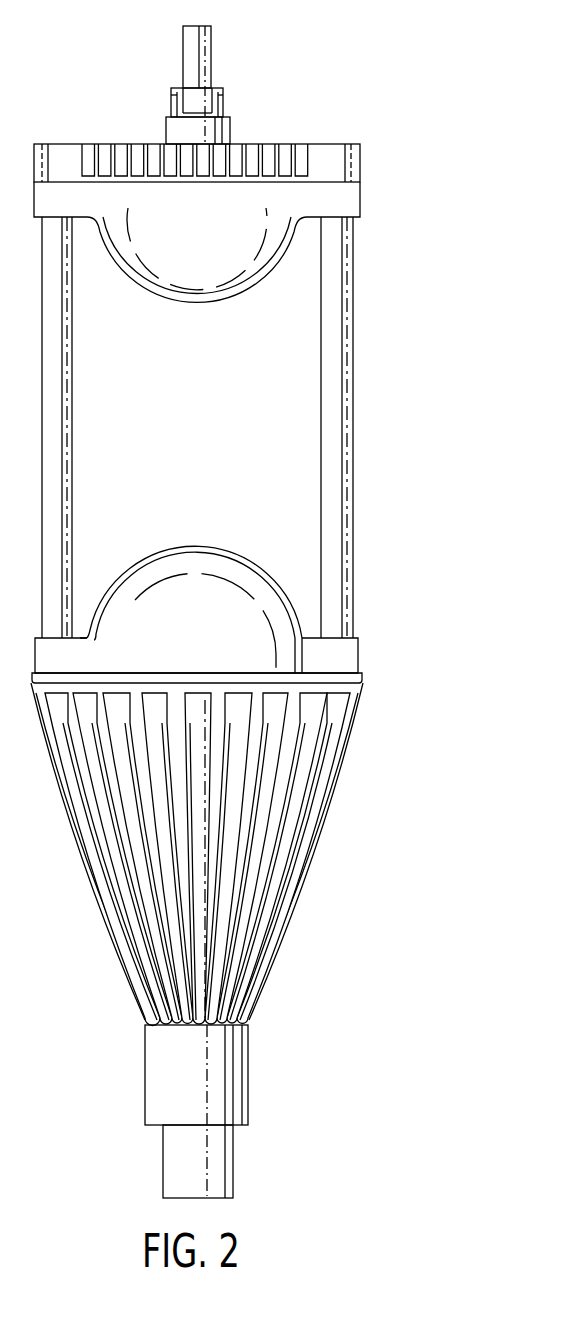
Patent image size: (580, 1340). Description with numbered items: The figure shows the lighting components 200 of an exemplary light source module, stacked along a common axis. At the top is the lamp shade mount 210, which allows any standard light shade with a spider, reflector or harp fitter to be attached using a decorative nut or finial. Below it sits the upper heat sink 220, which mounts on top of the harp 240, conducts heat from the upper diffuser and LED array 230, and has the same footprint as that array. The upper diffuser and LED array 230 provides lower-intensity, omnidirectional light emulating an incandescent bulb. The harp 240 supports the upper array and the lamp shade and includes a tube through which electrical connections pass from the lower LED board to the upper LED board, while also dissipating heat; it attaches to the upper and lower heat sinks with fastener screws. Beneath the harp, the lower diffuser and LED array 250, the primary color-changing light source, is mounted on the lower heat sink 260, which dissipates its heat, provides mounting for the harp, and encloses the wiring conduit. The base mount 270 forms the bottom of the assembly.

The lighting components 200 is at (519, 35).
The lamp shade mount 210 is at (206, 83).
The upper heat sink 220 is at (331, 157).
The upper diffuser and LED array 230 is at (347, 198).
The harp 240 is at (335, 417).
The lower diffuser and LED array 250 is at (343, 658).
The lower heat sink 260 is at (335, 780).
The base mount 270 is at (232, 1158).